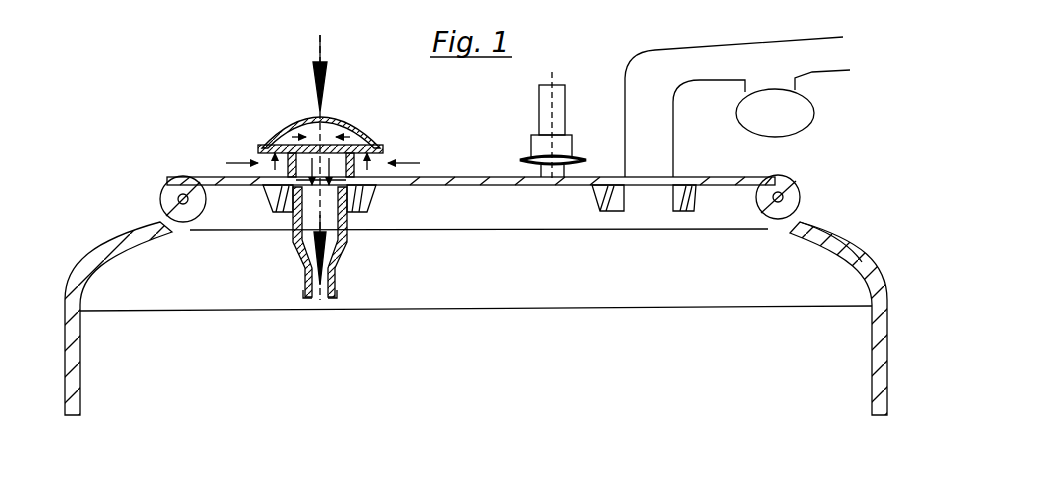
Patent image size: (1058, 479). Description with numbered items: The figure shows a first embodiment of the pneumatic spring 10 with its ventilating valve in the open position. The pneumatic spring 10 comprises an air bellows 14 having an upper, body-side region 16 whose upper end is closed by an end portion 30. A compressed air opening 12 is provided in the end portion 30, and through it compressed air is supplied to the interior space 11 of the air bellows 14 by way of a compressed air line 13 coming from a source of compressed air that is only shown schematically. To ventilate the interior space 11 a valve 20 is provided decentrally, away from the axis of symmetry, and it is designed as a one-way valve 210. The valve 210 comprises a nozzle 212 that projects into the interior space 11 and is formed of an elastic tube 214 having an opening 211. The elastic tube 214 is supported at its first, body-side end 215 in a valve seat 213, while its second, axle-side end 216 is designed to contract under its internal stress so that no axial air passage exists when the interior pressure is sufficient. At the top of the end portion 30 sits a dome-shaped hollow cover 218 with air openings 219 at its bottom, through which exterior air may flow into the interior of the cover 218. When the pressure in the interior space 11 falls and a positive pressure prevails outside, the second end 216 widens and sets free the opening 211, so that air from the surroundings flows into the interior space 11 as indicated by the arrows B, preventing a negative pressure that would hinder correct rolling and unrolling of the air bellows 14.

The pneumatic spring 10 is at (473, 275).
The interior space 11 is at (752, 370).
The compressed air opening 12 is at (667, 200).
The compressed air line 13 is at (672, 145).
The air bellows 14 is at (874, 366).
The upper body-side region 16 is at (854, 242).
The valve 20 is at (301, 206).
The end portion 30 is at (488, 160).
The one-way valve 210 is at (258, 147).
The opening 211 is at (322, 300).
The nozzle 212 is at (312, 300).
The valve seat 213 is at (364, 206).
The elastic tube 214 is at (290, 238).
The first body-side end 215 is at (350, 236).
The second axle-side end 216 is at (338, 293).
The dome-shaped hollow cover 218 is at (292, 128).
The air openings 219 is at (376, 160).
The arrows B is at (332, 162).